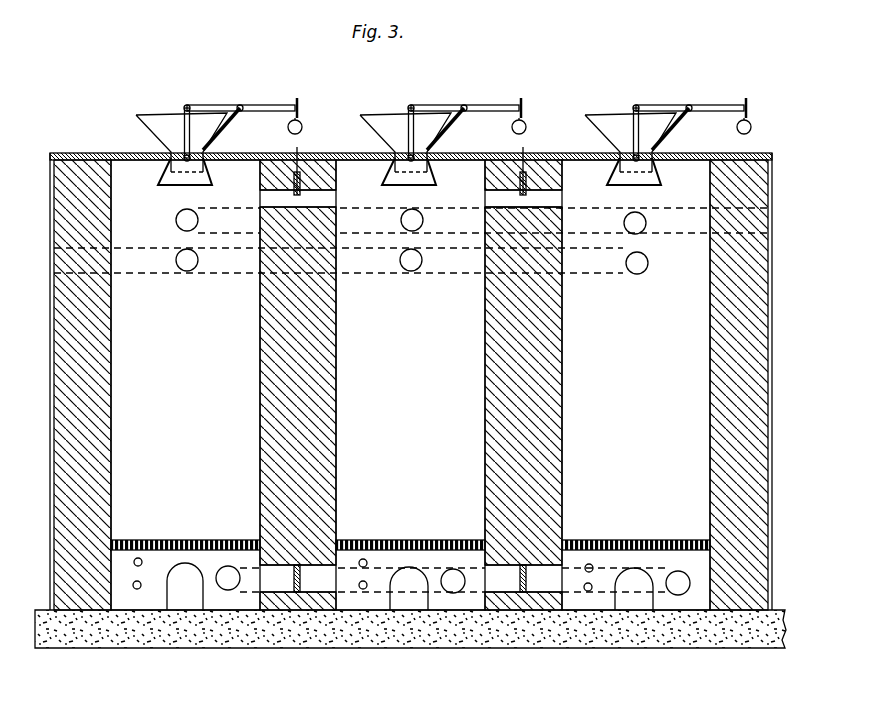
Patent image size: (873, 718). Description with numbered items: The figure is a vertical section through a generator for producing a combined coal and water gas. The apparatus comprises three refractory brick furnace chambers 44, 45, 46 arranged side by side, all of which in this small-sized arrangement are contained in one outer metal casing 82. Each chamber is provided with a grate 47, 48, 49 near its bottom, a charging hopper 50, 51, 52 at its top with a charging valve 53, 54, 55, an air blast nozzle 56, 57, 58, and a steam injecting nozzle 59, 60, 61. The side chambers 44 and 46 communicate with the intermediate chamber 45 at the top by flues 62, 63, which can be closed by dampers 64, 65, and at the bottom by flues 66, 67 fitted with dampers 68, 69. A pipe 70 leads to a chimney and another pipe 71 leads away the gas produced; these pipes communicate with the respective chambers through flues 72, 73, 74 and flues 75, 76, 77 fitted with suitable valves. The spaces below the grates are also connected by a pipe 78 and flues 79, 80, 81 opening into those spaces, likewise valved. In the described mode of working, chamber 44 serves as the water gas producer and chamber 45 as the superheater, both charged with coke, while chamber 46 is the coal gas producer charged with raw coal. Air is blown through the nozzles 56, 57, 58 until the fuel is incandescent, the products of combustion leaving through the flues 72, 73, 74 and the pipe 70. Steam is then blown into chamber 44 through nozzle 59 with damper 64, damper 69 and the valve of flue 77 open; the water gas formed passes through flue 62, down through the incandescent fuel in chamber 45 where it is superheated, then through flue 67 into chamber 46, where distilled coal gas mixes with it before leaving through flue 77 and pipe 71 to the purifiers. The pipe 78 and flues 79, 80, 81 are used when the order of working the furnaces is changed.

The furnace chamber 44 is at (185, 385).
The furnace chamber 45 is at (410, 385).
The furnace chamber 46 is at (636, 385).
The grate 47 is at (189, 540).
The grate 48 is at (412, 540).
The grate 49 is at (645, 541).
The charging hopper 50 is at (219, 135).
The charging hopper 51 is at (443, 135).
The charging hopper 52 is at (668, 135).
The charging valve 53 is at (178, 180).
The charging valve 54 is at (414, 182).
The charging valve 55 is at (645, 184).
The air blast nozzle 56 is at (137, 589).
The air blast nozzle 57 is at (363, 589).
The air blast nozzle 58 is at (588, 591).
The steam injecting nozzle 59 is at (147, 559).
The steam injecting nozzle 60 is at (367, 563).
The steam injecting nozzle 61 is at (593, 567).
The flue 62 is at (330, 196).
The flue 63 is at (560, 197).
The damper 64 is at (296, 190).
The damper 65 is at (521, 191).
The flue 66 is at (298, 578).
The flue 67 is at (523, 579).
The damper 68 is at (293, 582).
The damper 69 is at (519, 582).
The pipe 70 is at (50, 272).
The pipe 71 is at (772, 237).
The flue 72 is at (185, 271).
The flue 73 is at (410, 271).
The flue 74 is at (640, 274).
The flue 75 is at (176, 222).
The flue 76 is at (401, 224).
The flue 77 is at (647, 227).
The pipe 78 is at (241, 565).
The flue 79 is at (229, 578).
The flue 80 is at (454, 581).
The flue 81 is at (679, 583).
The outer metal casing 82 is at (50, 326).